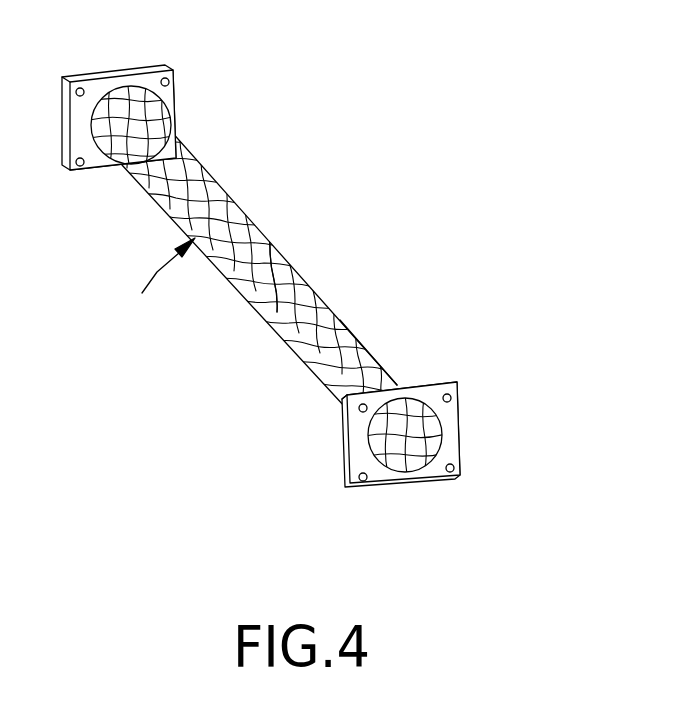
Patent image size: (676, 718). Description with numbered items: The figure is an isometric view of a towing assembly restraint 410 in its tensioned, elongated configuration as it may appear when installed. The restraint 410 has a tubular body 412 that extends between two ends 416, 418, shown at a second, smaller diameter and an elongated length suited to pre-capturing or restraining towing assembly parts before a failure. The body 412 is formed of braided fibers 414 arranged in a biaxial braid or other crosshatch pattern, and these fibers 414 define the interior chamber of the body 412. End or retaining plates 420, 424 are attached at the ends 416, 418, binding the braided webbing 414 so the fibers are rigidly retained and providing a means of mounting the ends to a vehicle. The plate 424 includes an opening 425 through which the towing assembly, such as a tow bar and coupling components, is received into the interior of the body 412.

The towing assembly restraint 410 is at (342, 128).
The tubular body 412 is at (269, 272).
The body fibers 414 is at (299, 252).
The first end 416 is at (117, 162).
The second end 418 is at (389, 339).
The end plate 420 is at (121, 119).
The end plate 424 is at (454, 427).
The opening 425 is at (452, 421).